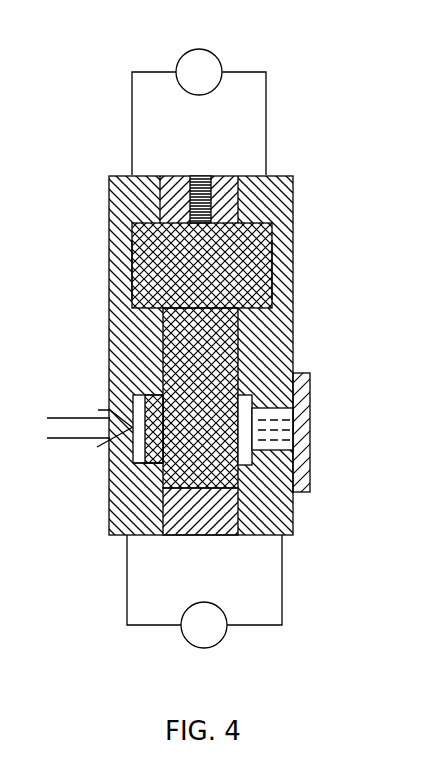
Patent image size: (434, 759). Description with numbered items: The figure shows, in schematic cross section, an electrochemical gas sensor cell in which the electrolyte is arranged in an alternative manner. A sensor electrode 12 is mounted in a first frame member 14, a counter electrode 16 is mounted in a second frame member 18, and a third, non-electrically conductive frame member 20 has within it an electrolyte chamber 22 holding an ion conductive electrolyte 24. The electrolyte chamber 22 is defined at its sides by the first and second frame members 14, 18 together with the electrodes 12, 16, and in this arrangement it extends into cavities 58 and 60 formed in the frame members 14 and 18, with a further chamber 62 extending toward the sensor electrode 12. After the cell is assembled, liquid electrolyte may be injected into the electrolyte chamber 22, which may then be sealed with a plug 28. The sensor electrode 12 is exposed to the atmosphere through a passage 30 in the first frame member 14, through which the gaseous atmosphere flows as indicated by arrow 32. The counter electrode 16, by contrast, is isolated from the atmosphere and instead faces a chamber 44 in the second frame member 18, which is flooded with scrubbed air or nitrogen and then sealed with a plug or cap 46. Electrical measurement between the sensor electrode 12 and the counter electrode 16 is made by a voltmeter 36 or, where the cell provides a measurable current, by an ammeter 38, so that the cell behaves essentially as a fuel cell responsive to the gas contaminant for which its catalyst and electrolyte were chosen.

The sensor electrode 12 is at (140, 466).
The first frame member 14 is at (113, 252).
The counter electrode 16 is at (257, 404).
The second frame member 18 is at (295, 298).
The third frame member 20 is at (213, 527).
The electrolyte chamber 22 is at (190, 348).
The electrolyte 24 is at (238, 248).
The plug 28 is at (197, 175).
The passage 30 is at (114, 388).
The arrow 32 is at (72, 420).
The voltmeter 36 is at (182, 55).
The ammeter 38 is at (220, 642).
The chamber 44 is at (311, 462).
The plug or cap 46 is at (311, 410).
The cavity 58 is at (131, 273).
The cavity 60 is at (262, 272).
The chamber 62 is at (133, 435).